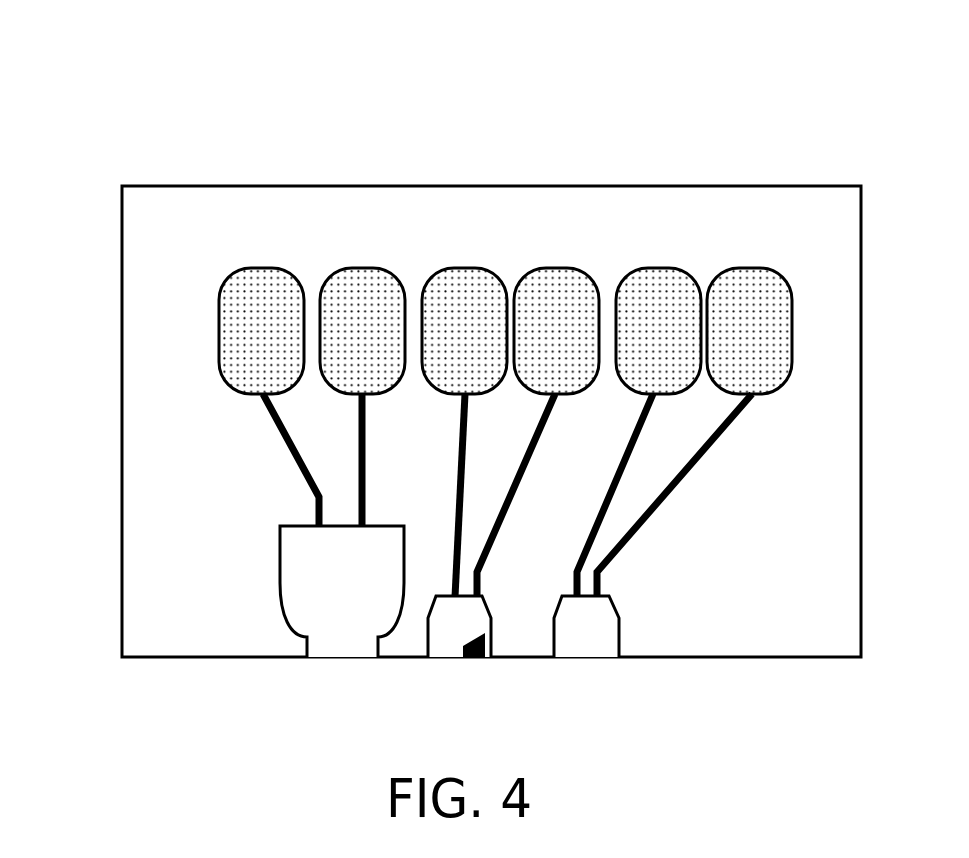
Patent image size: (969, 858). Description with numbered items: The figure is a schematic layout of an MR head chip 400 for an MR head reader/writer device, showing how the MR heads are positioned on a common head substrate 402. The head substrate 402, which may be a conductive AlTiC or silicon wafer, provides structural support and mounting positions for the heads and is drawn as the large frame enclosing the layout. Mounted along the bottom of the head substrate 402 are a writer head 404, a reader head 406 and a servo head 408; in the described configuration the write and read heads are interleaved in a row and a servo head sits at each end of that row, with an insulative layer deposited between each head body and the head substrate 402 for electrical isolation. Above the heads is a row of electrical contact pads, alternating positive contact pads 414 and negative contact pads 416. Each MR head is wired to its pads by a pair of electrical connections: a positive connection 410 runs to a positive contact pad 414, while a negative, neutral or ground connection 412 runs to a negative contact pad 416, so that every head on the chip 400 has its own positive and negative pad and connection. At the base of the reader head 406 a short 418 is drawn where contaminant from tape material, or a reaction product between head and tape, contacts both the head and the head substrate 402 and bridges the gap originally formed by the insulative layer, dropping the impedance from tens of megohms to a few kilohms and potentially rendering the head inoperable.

The MR head chip 400 is at (90, 92).
The head substrate 402 is at (122, 186).
The writer head 404 is at (335, 658).
The reader head 406 is at (440, 658).
The servo head 408 is at (590, 658).
The positive connection 410 is at (458, 440).
The negative connection 412 is at (527, 468).
The positive contact pad 414 is at (263, 268).
The negative contact pad 416 is at (364, 268).
The short 418 is at (478, 660).